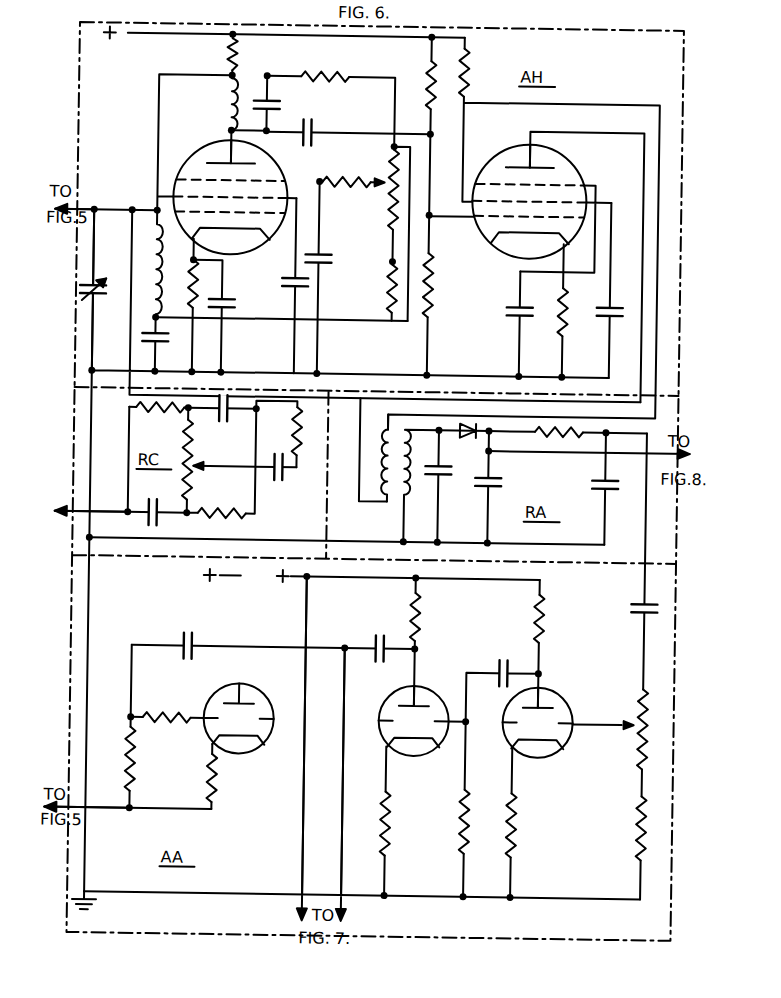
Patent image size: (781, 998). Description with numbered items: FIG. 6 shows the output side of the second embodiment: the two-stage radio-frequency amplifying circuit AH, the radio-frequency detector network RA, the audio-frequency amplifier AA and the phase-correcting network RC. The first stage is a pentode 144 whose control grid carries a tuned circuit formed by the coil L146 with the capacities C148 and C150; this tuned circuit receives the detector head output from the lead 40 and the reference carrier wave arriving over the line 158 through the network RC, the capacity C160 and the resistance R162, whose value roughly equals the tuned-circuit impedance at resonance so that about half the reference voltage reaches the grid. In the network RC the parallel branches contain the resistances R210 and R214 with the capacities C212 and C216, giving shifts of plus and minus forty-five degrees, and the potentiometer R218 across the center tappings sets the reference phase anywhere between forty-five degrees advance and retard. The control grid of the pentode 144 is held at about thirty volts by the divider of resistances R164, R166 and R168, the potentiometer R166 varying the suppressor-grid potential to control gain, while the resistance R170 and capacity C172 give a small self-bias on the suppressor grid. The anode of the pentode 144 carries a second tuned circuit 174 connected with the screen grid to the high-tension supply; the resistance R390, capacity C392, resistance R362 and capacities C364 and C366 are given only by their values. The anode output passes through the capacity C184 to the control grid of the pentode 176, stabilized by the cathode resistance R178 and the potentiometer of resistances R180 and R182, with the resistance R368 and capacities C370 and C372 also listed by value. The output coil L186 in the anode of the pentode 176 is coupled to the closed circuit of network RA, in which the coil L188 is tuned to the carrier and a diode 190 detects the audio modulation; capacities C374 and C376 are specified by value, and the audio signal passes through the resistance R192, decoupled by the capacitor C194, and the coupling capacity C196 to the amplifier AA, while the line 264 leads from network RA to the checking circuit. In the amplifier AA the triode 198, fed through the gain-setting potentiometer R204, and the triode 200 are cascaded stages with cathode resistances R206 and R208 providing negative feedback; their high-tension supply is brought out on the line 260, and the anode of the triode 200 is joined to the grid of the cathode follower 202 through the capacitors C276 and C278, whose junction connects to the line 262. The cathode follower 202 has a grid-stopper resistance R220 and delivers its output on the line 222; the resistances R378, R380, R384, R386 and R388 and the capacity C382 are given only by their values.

The resistance R390 is at (226, 57).
The second tuned circuit 174 is at (270, 108).
The capacity C392 is at (278, 106).
The resistance R164 is at (330, 100).
The capacity C184 is at (311, 122).
The potentiometer resistance R180 is at (425, 84).
The potentiometer resistance R182 is at (441, 278).
The resistance R368 is at (468, 70).
The pentode 144 is at (235, 192).
The resistance R170 is at (350, 183).
The potentiometer R166 is at (389, 179).
The resistance R168 is at (387, 279).
The capacity C172 is at (350, 233).
The pentode 176 is at (549, 242).
The cathode resistance R178 is at (577, 320).
The capacity C370 is at (511, 304).
The capacity C372 is at (597, 301).
The lead 40 is at (83, 198).
The capacity C148 is at (111, 296).
The coil L146 is at (155, 272).
The capacity C150 is at (175, 345).
The resistance R362 is at (204, 277).
The capacity C364 is at (237, 303).
The capacity C366 is at (290, 279).
The resistance R210 is at (160, 423).
The capacity C212 is at (228, 412).
The potentiometer R218 is at (240, 463).
The resistance R162 is at (321, 430).
The capacity C160 is at (290, 475).
The capacity C216 is at (167, 490).
The resistance R214 is at (222, 463).
The line 158 is at (103, 510).
The output coil L186 is at (385, 478).
The coil L188 is at (414, 480).
The diode 190 is at (473, 428).
The capacity C374 is at (453, 488).
The capacity C376 is at (510, 483).
The resistance R192 is at (564, 432).
The radio-frequency de-coupling capacitor C194 is at (600, 478).
The line 264 is at (652, 460).
The capacitor C276 is at (199, 636).
The capacitor C278 is at (389, 634).
The resistance R384 is at (540, 613).
The capacity coupling C196 is at (640, 600).
The capacity C382 is at (507, 656).
The grid-stopper resistance R220 is at (184, 710).
The triode cathode follower 202 is at (262, 724).
The second triode audio-frequency amplifying stage 200 is at (437, 725).
The first triode audio-frequency amplifying stage 198 is at (562, 724).
The potentiometer R204 is at (610, 742).
The resistance R388 is at (150, 772).
The resistance R386 is at (229, 776).
The line 222 is at (108, 805).
The line 260 is at (313, 805).
The line 262 is at (353, 805).
The cathode resistance R208 is at (400, 812).
The resistance R380 is at (472, 830).
The cathode resistance R206 is at (528, 810).
The resistance R378 is at (641, 828).